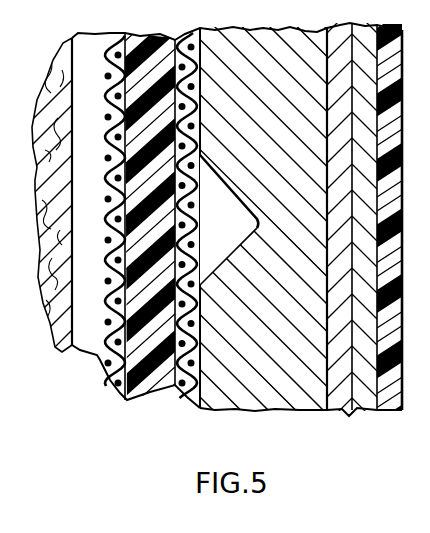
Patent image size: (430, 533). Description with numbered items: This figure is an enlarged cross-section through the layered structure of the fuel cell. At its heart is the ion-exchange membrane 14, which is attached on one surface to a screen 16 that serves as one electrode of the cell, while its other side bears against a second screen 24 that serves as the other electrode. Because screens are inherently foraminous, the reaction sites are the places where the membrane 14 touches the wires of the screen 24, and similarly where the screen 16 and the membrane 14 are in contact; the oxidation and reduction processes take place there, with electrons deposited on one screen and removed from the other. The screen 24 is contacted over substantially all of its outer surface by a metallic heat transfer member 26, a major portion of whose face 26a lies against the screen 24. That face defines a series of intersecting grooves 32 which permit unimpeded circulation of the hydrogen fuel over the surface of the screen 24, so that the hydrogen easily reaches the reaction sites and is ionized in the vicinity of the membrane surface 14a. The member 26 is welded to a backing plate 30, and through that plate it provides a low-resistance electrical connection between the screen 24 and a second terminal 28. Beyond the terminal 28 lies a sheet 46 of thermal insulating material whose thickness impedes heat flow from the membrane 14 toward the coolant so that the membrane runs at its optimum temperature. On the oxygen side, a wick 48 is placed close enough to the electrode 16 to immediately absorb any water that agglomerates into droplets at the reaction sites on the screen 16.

The ion-exchange membrane 14 is at (142, 396).
The membrane surface 14a is at (238, 200).
The screen 16 is at (102, 351).
The second screen 24 is at (201, 263).
The metallic heat transfer member 26 is at (235, 398).
The face of the heat transfer member 26a is at (192, 408).
The second terminal 28 is at (367, 406).
The backing plate 30 is at (342, 409).
The grooves 32 is at (241, 206).
The sheet of thermal insulating material 46 is at (400, 401).
The wick 48 is at (60, 328).